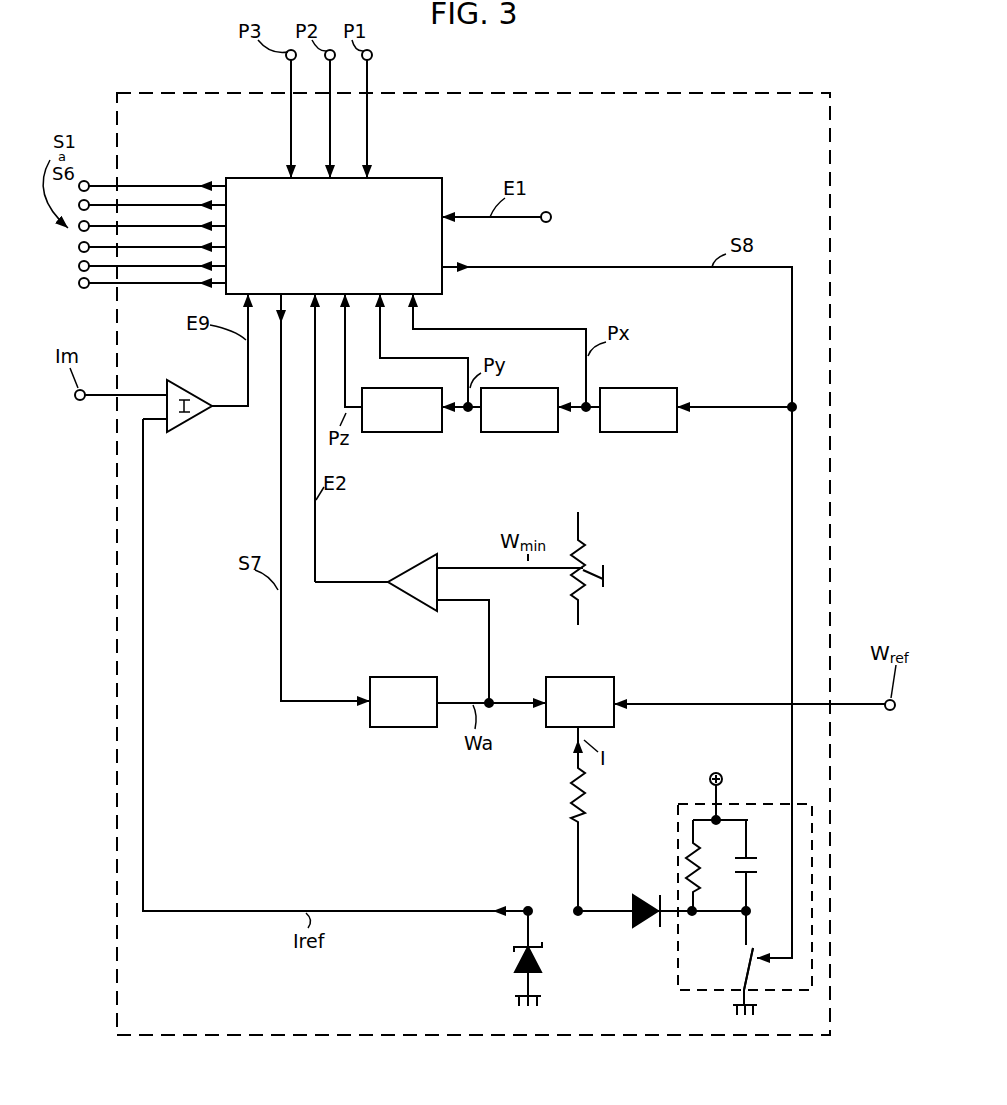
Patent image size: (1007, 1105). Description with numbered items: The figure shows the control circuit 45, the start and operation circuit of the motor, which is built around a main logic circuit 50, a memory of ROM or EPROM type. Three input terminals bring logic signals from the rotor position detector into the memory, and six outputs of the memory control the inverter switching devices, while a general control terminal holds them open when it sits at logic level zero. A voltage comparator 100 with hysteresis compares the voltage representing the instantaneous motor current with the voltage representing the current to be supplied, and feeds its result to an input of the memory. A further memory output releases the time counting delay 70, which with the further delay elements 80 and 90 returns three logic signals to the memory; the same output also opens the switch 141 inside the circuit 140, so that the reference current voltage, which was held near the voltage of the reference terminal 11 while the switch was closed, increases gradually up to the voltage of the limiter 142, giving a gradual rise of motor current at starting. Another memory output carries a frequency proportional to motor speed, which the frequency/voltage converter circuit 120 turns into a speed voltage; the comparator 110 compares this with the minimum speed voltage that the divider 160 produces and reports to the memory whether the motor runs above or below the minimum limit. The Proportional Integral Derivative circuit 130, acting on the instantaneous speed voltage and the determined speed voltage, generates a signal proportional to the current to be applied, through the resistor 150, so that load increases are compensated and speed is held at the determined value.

The control circuit 45 is at (255, 1035).
The main logic circuit 50 is at (413, 178).
The delay element 70 is at (672, 432).
The delay element 80 is at (545, 432).
The delay element 90 is at (428, 432).
The voltage comparator 100 is at (193, 421).
The comparator 110 is at (410, 571).
The frequency/voltage converter circuit 120 is at (383, 727).
The Proportional Integral Derivative (PID) circuit 130 is at (614, 687).
The circuit 140 is at (700, 990).
The switch 141 is at (742, 966).
The limiter 142 is at (515, 955).
The resistor 150 is at (572, 794).
The divider 160 is at (588, 562).
The reference terminal 11 is at (747, 990).